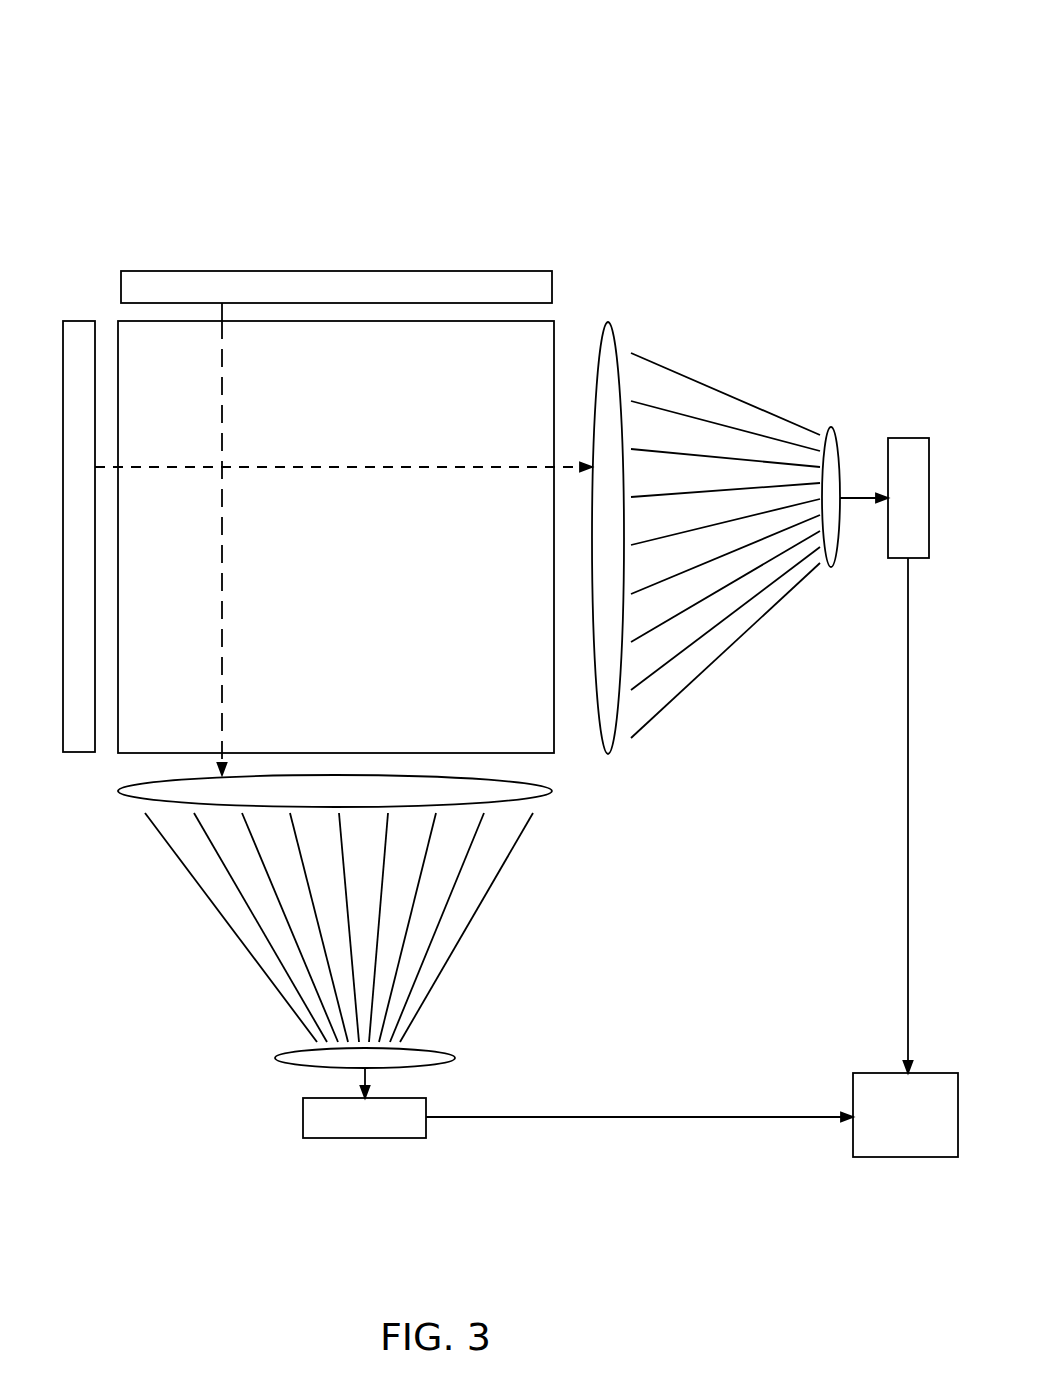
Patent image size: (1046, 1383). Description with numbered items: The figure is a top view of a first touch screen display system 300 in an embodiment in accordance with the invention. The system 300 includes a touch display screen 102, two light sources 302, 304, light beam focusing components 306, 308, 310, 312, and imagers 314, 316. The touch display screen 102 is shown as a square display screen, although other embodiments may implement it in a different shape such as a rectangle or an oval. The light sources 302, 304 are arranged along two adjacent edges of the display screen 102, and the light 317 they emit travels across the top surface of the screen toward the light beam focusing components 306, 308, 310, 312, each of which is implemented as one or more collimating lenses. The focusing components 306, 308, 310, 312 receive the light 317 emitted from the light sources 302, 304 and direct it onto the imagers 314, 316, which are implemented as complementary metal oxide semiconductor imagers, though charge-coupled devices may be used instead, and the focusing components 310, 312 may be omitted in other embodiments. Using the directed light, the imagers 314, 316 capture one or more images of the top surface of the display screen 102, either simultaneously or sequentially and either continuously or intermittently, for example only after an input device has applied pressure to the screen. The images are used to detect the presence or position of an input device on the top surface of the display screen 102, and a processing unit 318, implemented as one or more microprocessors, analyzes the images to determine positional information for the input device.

The touch screen display system 300 is at (558, 127).
The light source 302 is at (350, 259).
The light source 304 is at (79, 764).
The touch display screen 102 is at (413, 586).
The light 317 is at (234, 395).
The light beam focusing component 306 is at (620, 759).
The light beam focusing component 308 is at (562, 800).
The light beam focusing component 310 is at (833, 581).
The light beam focusing component 312 is at (263, 1058).
The imager 314 is at (908, 426).
The imager 316 is at (365, 1150).
The processing unit 318 is at (885, 1127).